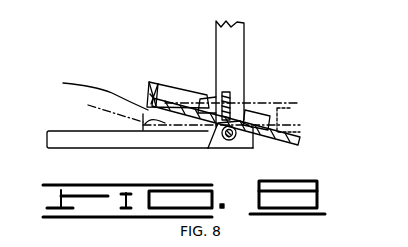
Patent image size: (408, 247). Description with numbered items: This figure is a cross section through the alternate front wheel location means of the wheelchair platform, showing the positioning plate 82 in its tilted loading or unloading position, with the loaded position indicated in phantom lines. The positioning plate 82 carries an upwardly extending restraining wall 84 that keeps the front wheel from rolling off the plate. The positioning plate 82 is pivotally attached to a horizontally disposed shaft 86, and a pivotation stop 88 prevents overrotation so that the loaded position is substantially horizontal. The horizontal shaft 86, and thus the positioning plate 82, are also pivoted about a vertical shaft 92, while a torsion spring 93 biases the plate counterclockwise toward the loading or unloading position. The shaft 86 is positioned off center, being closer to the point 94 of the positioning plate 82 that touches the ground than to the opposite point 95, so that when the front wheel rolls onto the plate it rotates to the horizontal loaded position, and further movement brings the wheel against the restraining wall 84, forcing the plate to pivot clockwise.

The positioning plate 82 is at (330, 132).
The restraining wall 84 is at (152, 100).
The horizontal shaft 86 is at (227, 141).
The pivotation stop 88 is at (208, 147).
The vertical shaft 92 is at (226, 96).
The torsion spring 93 is at (234, 101).
The point of positioning plate 94 is at (295, 144).
The opposite point 95 is at (95, 93).